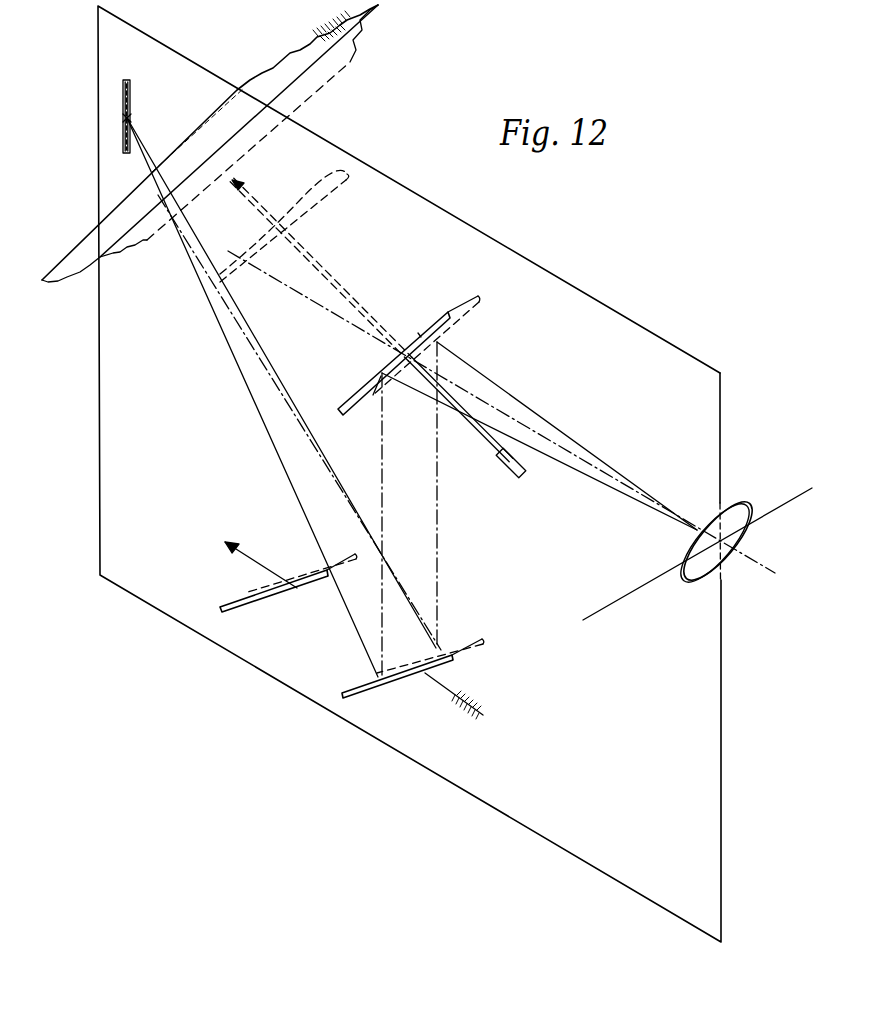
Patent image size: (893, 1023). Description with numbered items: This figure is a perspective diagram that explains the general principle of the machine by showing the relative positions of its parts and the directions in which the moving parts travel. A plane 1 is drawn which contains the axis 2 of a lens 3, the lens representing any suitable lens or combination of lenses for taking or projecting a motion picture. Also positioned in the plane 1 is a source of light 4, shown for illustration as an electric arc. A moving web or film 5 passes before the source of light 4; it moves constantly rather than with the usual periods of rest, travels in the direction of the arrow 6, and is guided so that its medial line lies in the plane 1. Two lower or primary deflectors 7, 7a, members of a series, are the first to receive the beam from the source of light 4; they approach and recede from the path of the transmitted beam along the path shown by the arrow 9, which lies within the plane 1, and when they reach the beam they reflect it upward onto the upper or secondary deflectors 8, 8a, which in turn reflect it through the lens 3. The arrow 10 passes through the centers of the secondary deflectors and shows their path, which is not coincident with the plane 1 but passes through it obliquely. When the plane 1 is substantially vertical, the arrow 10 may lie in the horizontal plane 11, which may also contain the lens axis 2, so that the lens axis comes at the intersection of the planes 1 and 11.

The plane 1 is at (618, 312).
The axis of the lens 2 is at (593, 463).
The lens 3 is at (733, 503).
The source of light 4 is at (131, 113).
The moving web or film 5 is at (313, 72).
The arrow 6 is at (316, 30).
The lower or primary deflector 7 is at (366, 680).
The lower or primary deflector 7a is at (238, 593).
The upper or secondary deflector 8 is at (448, 332).
The upper or secondary deflector 8a is at (315, 208).
The arrow 9 is at (453, 688).
The arrow 10 is at (507, 478).
The plane 11 is at (657, 578).